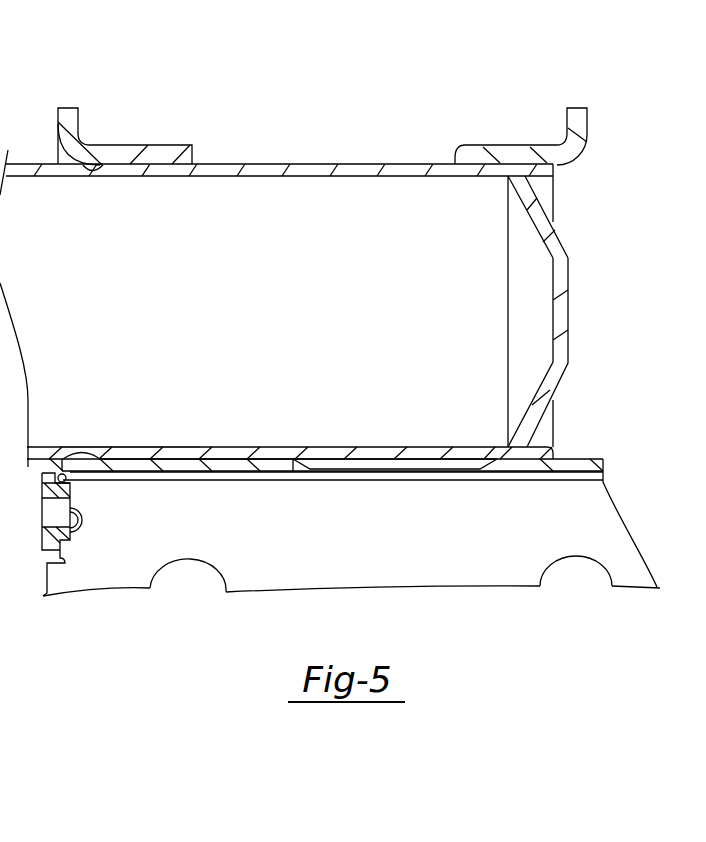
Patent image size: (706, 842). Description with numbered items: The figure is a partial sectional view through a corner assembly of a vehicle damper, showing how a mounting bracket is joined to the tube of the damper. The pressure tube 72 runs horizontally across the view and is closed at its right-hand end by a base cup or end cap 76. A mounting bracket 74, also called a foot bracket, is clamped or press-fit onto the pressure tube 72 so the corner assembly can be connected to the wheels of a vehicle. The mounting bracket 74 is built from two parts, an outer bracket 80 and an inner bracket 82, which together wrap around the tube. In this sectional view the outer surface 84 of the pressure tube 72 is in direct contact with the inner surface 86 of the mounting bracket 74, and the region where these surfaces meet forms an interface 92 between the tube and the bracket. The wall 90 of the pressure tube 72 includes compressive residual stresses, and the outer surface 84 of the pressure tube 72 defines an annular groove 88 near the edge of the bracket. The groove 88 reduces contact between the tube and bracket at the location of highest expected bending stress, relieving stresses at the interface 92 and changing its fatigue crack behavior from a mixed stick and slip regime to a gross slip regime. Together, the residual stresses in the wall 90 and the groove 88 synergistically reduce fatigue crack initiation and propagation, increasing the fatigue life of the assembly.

The pressure tube 72 is at (353, 165).
The mounting bracket 74 is at (154, 137).
The end cap 76 is at (567, 312).
The outer bracket 80 is at (500, 145).
The inner bracket 82 is at (545, 187).
The outer surface 84 is at (173, 465).
The inner surface 86 is at (163, 458).
The annular groove 88 is at (66, 172).
The wall 90 is at (240, 450).
The interface 92 is at (159, 182).